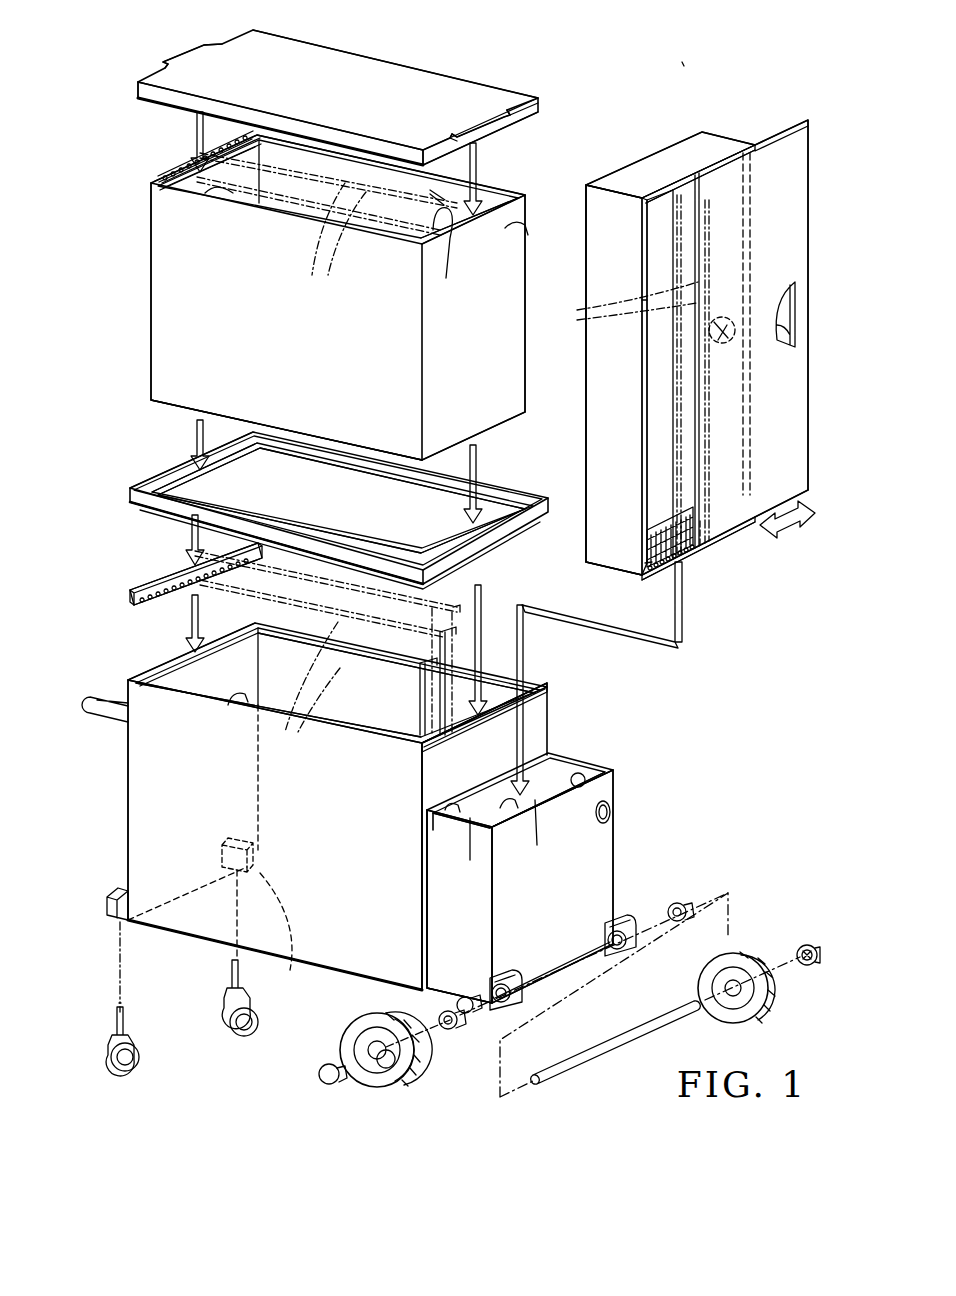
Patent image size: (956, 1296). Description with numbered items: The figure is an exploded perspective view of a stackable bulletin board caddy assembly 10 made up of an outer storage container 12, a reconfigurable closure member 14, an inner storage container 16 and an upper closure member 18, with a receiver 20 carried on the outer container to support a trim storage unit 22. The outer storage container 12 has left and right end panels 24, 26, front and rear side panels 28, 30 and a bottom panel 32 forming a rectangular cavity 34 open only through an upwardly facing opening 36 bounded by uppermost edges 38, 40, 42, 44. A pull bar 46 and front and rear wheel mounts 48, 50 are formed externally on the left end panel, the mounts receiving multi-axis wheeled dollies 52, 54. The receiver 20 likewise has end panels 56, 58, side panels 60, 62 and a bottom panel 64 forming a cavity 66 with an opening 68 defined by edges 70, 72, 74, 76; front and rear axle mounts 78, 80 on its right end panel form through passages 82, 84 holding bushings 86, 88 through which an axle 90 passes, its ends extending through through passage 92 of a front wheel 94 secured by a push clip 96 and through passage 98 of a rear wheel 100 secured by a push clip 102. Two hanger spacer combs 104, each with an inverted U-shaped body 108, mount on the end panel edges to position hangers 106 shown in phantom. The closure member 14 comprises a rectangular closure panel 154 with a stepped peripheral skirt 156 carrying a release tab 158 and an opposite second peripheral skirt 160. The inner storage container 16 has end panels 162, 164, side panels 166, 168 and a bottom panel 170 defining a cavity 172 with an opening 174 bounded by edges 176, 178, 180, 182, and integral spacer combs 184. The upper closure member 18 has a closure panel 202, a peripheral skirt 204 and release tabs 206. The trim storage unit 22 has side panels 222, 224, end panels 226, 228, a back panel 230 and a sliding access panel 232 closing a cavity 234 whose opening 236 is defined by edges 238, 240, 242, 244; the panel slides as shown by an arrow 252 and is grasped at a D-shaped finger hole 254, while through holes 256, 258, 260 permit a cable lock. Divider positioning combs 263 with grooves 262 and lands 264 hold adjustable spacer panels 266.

The stackable bulletin board caddy assembly 10 is at (683, 64).
The outer storage container 12 is at (354, 849).
The reconfigurable closure member 14 is at (309, 504).
The inner storage container 16 is at (341, 282).
The upper closure member 18 is at (342, 91).
The receiver 20 is at (568, 896).
The trim storage unit 22 is at (676, 357).
The left end panel 24 is at (195, 663).
The right end panel 26 is at (540, 710).
The front side panel 28 is at (155, 812).
The rear side panel 30 is at (500, 690).
The bottom panel 32 is at (165, 930).
The rectangular cavity 34 is at (353, 706).
The rectangular upwardly facing opening 36 is at (235, 700).
The uppermost continuous edge 38 is at (150, 680).
The uppermost continuous edge 40 is at (432, 780).
The uppermost continuous edge 42 is at (180, 690).
The uppermost continuous edge 44 is at (481, 640).
The handle assembly or pull bar 46 is at (95, 720).
The front wheel mount 48 is at (112, 902).
The rear wheel mount 50 is at (270, 905).
The multi-axis wheeled dolly 52 is at (120, 1048).
The multi-axis wheeled dolly 54 is at (232, 1030).
The left end panel 56 is at (456, 815).
The right end panel 58 is at (598, 855).
The front side panel 60 is at (425, 915).
The rear side panel 62 is at (560, 775).
The bottom panel 64 is at (449, 1030).
The rectangular cavity 66 is at (505, 820).
The rectangular upwardly facing opening 68 is at (433, 808).
The uppermost continuous edge 70 is at (440, 810).
The uppermost continuous edge 72 is at (536, 835).
The uppermost continuous edge 74 is at (470, 838).
The uppermost continuous edge 76 is at (585, 783).
The front axle mount 78 is at (500, 978).
The rear axle mount 80 is at (622, 915).
The through passage 82 is at (500, 1002).
The through passage 84 is at (618, 950).
The front axle bushing 86 is at (463, 997).
The rear axle bushing 88 is at (690, 905).
The axle 90 is at (635, 1038).
The through passage 92 is at (372, 1047).
The front wheel 94 is at (405, 1065).
The push clip 96 is at (322, 1070).
The through passage 98 is at (733, 1000).
The rear wheel 100 is at (805, 930).
The push clip 102 is at (805, 965).
The hanger spacer comb 104 is at (261, 639).
The hanger 106 is at (327, 230).
The inverted U-shaped body 108 is at (160, 585).
The rectangular closure panel 154 is at (325, 495).
The stepped peripheral skirt 156 is at (170, 480).
The release tab 158 is at (180, 458).
The second peripheral skirt 160 is at (160, 510).
The left end panel 162 is at (198, 175).
The right end panel 164 is at (500, 260).
The front side panel 166 is at (160, 277).
The rear side panel 168 is at (470, 190).
The bottom panel 170 is at (490, 432).
The rectangular cavity 172 is at (440, 256).
The rectangular upwardly facing opening 174 is at (257, 185).
The uppermost continuous edge 176 is at (160, 187).
The uppermost continuous edge 178 is at (528, 217).
The uppermost continuous edge 180 is at (185, 220).
The uppermost continuous edge 182 is at (440, 185).
The hanger spacer comb 184 is at (233, 138).
The rectangular closure panel 202 is at (430, 95).
The peripheral skirt 204 is at (160, 95).
The release tab 206 is at (185, 58).
The front side panel 222 is at (610, 415).
The rear side panel 224 is at (715, 540).
The upper end panel 226 is at (672, 160).
The lower end panel 228 is at (740, 528).
The back panel 230 is at (590, 550).
The sliding access/door panel 232 is at (805, 519).
The rectangular cavity 234 is at (655, 382).
The rectangular rightwardly facing opening 236 is at (650, 220).
The continuous vertical edge 238 is at (650, 470).
The continuous vertical edge 240 is at (750, 205).
The continuous horizontal edge 242 is at (706, 170).
The continuous horizontal edge 244 is at (760, 530).
The arrow 252 is at (775, 540).
The D-shaped finger hole 254 is at (780, 340).
The through hole 256 is at (732, 322).
The through hole 258 is at (612, 812).
The through hole 260 is at (612, 805).
The groove 262 is at (640, 545).
The divider positioning comb 263 is at (652, 565).
The land 264 is at (688, 572).
The spacer panel 266 is at (600, 310).